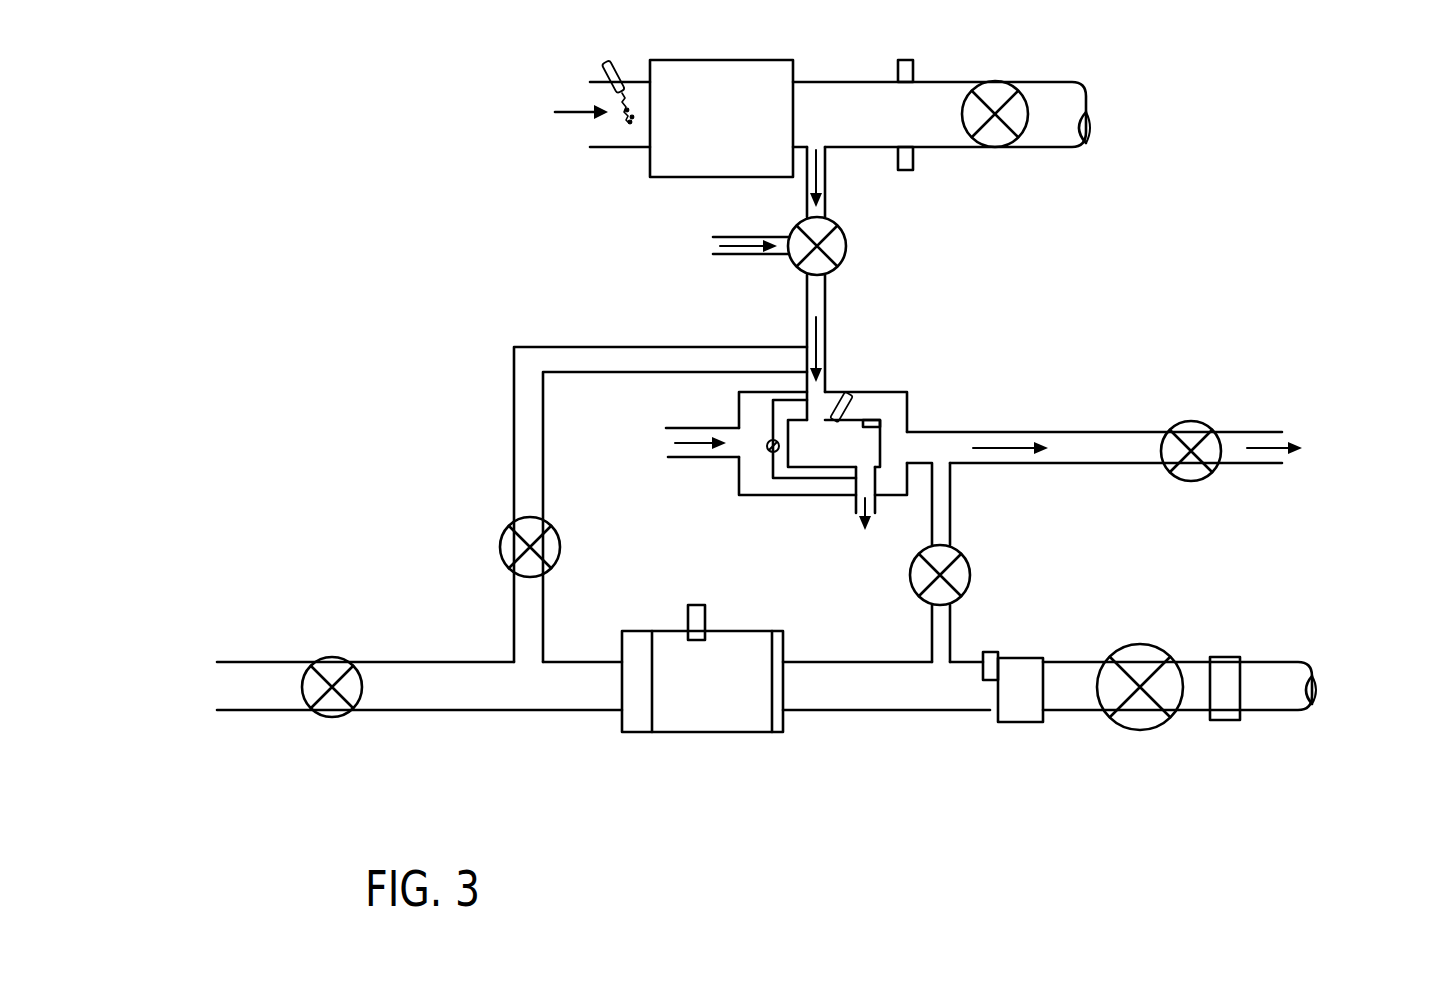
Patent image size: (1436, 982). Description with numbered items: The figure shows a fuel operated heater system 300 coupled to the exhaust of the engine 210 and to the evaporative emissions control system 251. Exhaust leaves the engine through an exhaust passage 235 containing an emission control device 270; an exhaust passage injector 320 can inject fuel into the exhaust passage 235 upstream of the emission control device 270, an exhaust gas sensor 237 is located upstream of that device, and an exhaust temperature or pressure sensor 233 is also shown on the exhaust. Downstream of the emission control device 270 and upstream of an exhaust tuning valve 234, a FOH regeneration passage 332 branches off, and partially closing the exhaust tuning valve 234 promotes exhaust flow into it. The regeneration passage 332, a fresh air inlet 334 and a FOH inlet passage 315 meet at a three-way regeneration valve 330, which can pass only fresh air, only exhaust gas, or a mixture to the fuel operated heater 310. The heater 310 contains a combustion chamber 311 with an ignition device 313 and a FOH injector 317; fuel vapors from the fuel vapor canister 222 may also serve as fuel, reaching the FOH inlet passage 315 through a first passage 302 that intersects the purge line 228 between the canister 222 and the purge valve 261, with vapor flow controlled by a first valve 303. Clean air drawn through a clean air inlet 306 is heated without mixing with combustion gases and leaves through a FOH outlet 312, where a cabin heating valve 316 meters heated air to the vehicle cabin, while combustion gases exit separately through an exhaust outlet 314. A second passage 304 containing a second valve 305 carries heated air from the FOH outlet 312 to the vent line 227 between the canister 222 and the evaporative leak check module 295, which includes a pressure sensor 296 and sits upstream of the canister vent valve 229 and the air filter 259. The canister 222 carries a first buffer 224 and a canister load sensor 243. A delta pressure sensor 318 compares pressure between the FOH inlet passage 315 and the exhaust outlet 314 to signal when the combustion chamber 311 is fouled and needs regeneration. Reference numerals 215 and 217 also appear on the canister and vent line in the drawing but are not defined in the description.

The fuel operated heater system 300 is at (1316, 348).
The exhaust passage injector 320 is at (607, 62).
The emission control device 270 is at (705, 61).
The exhaust passage 235 is at (1019, 82).
The exhaust gas sensor 237 is at (898, 72).
The exhaust temperature or pressure sensor 233 is at (898, 156).
The exhaust tuning valve 234 is at (1012, 141).
The FOH regeneration passage 332 is at (807, 191).
The regeneration valve 330 is at (846, 245).
The fresh air inlet 334 is at (722, 258).
The FOH inlet passage 315 is at (807, 337).
The first passage 302 is at (514, 617).
The first valve 303 is at (502, 548).
The fuel operated heater 310 is at (823, 421).
The combustion chamber 311 is at (834, 443).
The FOH injector 317 is at (843, 393).
The ignition device 313 is at (881, 420).
The delta pressure sensor 318 is at (768, 452).
The clean air inlet 306 is at (705, 457).
The exhaust outlet 314 is at (856, 505).
The FOH outlet 312 is at (1087, 432).
The cabin heating valve 316 is at (1190, 421).
The second passage 304 is at (950, 512).
The second valve 305 is at (969, 575).
The purge line 228 is at (452, 701).
The engine 210 is at (122, 686).
The purge valve 261 is at (335, 657).
The fuel vapor canister 215 is at (620, 704).
The first buffer 224 is at (643, 644).
The fuel vapor canister 222 is at (783, 631).
The canister load sensor 243 is at (700, 605).
The vent line 227 is at (934, 697).
The vent passage 217 is at (885, 712).
The evaporative emissions control system 251 is at (1216, 600).
The pressure sensor 296 is at (990, 652).
The evaporative leak check module 295 is at (1015, 658).
The canister vent valve 229 is at (1138, 644).
The air filter 259 is at (1225, 657).